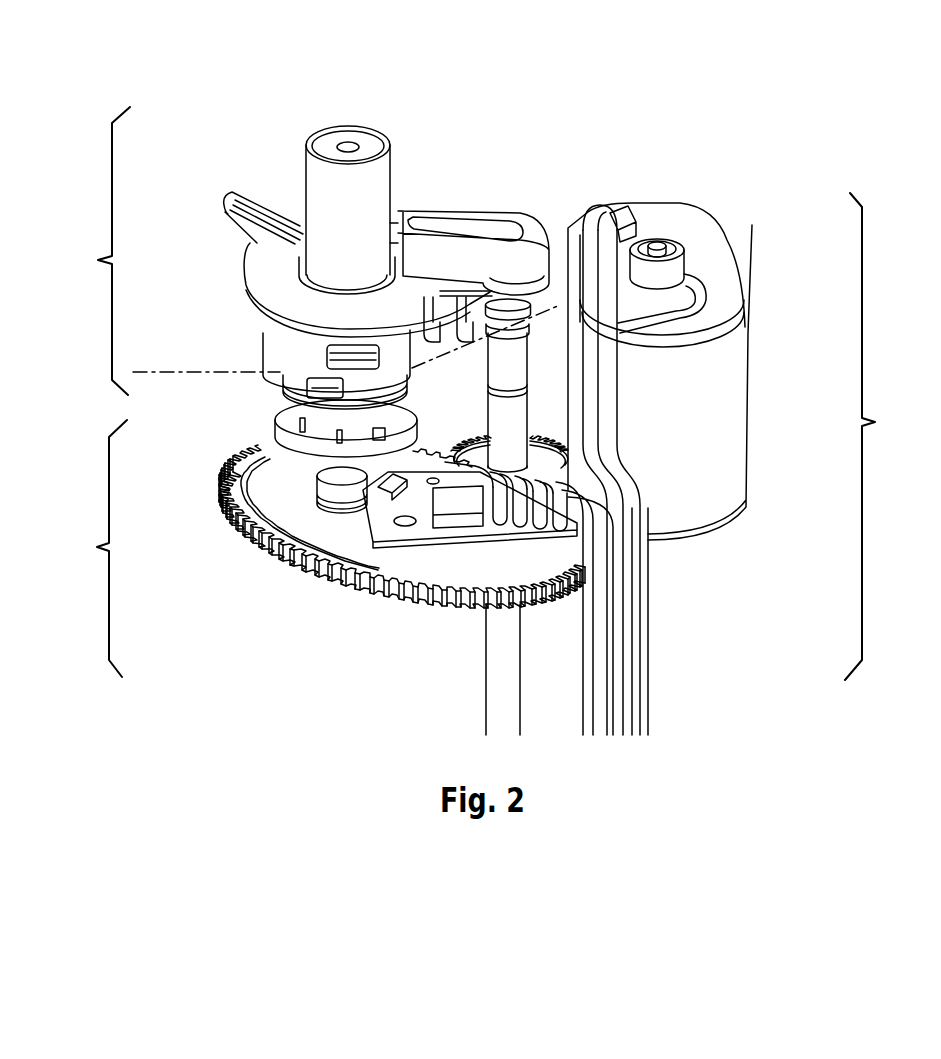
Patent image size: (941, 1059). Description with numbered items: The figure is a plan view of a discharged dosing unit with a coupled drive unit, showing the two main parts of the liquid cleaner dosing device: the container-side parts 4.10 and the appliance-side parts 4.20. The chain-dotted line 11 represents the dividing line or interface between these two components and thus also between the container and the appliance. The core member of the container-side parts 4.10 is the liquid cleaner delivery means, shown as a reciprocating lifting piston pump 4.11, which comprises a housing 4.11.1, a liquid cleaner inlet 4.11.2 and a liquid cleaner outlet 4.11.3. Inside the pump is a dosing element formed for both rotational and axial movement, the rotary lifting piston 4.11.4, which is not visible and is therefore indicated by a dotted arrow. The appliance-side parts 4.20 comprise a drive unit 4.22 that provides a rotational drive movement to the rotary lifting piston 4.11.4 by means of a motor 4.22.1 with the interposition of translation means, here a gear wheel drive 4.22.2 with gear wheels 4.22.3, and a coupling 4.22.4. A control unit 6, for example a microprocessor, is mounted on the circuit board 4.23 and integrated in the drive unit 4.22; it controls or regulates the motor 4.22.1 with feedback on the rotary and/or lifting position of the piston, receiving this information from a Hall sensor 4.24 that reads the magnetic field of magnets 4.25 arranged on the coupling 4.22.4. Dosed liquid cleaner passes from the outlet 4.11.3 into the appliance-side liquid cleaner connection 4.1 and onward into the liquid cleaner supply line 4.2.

The parts of the liquid cleaner dosing device on the container side 4.10 is at (87, 251).
The reciprocating lifting piston pump 4.11 is at (398, 207).
The housing 4.11.1 is at (373, 197).
The liquid cleaner inlet 4.11.2 is at (246, 182).
The liquid cleaner outlet 4.11.3 is at (527, 207).
The rotary lifting piston 4.11.4 is at (345, 100).
The chain-dotted line 11 is at (190, 372).
The liquid cleaner connection 4.1 is at (522, 355).
The liquid cleaner supply line 4.2 is at (497, 688).
The parts of the liquid cleaner dosing device on the appliance side 4.20 is at (891, 436).
The drive unit 4.22 is at (698, 451).
The motor 4.22.1 is at (716, 257).
The gear wheel drive 4.22.2 is at (77, 548).
The gear wheels 4.22.3 is at (230, 533).
The coupling 4.22.4 is at (293, 401).
The circuit board 4.23 is at (436, 526).
The Hall sensor 4.24 is at (388, 488).
The magnets 4.25 is at (280, 437).
The control unit 6 is at (452, 497).